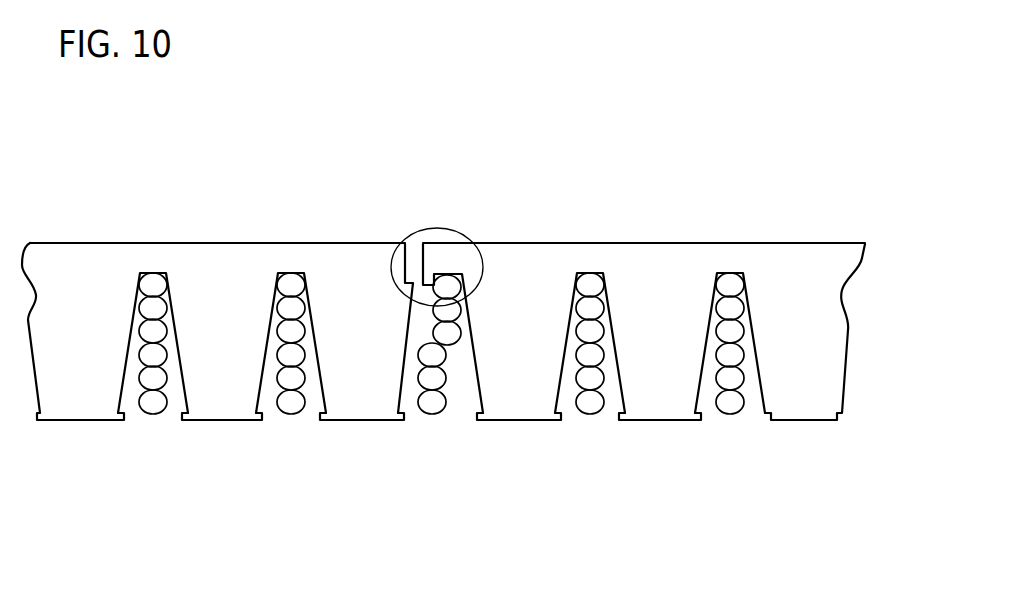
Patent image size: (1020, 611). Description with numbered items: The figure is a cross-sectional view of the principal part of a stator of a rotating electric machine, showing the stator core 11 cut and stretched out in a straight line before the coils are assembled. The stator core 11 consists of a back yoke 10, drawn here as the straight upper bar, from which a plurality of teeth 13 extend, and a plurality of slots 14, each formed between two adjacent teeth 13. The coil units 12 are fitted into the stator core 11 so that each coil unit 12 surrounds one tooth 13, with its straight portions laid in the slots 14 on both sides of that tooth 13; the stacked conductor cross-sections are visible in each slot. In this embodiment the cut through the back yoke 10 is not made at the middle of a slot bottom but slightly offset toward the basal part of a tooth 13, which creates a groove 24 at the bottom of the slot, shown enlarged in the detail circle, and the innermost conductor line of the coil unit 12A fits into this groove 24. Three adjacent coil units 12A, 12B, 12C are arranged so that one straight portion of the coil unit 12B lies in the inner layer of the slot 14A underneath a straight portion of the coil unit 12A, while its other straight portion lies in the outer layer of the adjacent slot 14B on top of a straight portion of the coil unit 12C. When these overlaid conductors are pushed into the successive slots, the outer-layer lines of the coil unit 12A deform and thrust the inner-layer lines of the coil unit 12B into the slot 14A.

The back yoke 10 is at (268, 263).
The stator core 11 is at (815, 275).
The coil unit 12 is at (428, 417).
The coil unit 12A is at (455, 345).
The coil unit 12B is at (597, 273).
The coil unit 12C is at (727, 273).
The tooth 13 is at (352, 298).
The slot 14 is at (315, 395).
The slot 14A is at (566, 392).
The slot 14B is at (703, 392).
The groove 24 is at (447, 229).